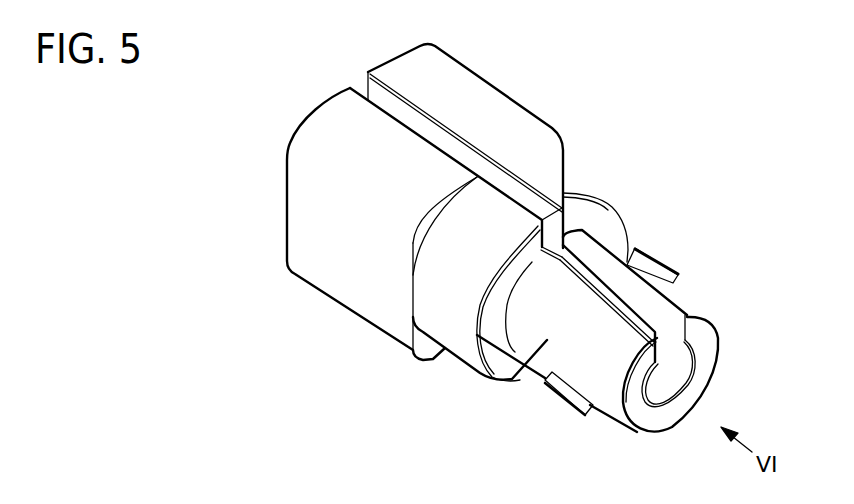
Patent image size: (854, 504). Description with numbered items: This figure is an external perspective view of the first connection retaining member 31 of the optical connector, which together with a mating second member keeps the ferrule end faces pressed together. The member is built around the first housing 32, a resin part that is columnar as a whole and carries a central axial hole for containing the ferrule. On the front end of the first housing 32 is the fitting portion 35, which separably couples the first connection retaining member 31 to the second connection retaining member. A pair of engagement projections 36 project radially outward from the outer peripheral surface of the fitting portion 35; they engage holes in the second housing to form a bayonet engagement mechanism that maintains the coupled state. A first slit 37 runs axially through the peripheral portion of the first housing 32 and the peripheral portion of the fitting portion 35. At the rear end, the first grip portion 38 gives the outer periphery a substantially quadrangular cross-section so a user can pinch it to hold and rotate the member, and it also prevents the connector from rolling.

The first connection retaining member 31 is at (628, 88).
The first housing 32 is at (308, 208).
The fitting portion 35 is at (570, 338).
The engagement projections 36 is at (656, 258).
The first slit 37 is at (470, 157).
The first grip portion 38 is at (413, 52).